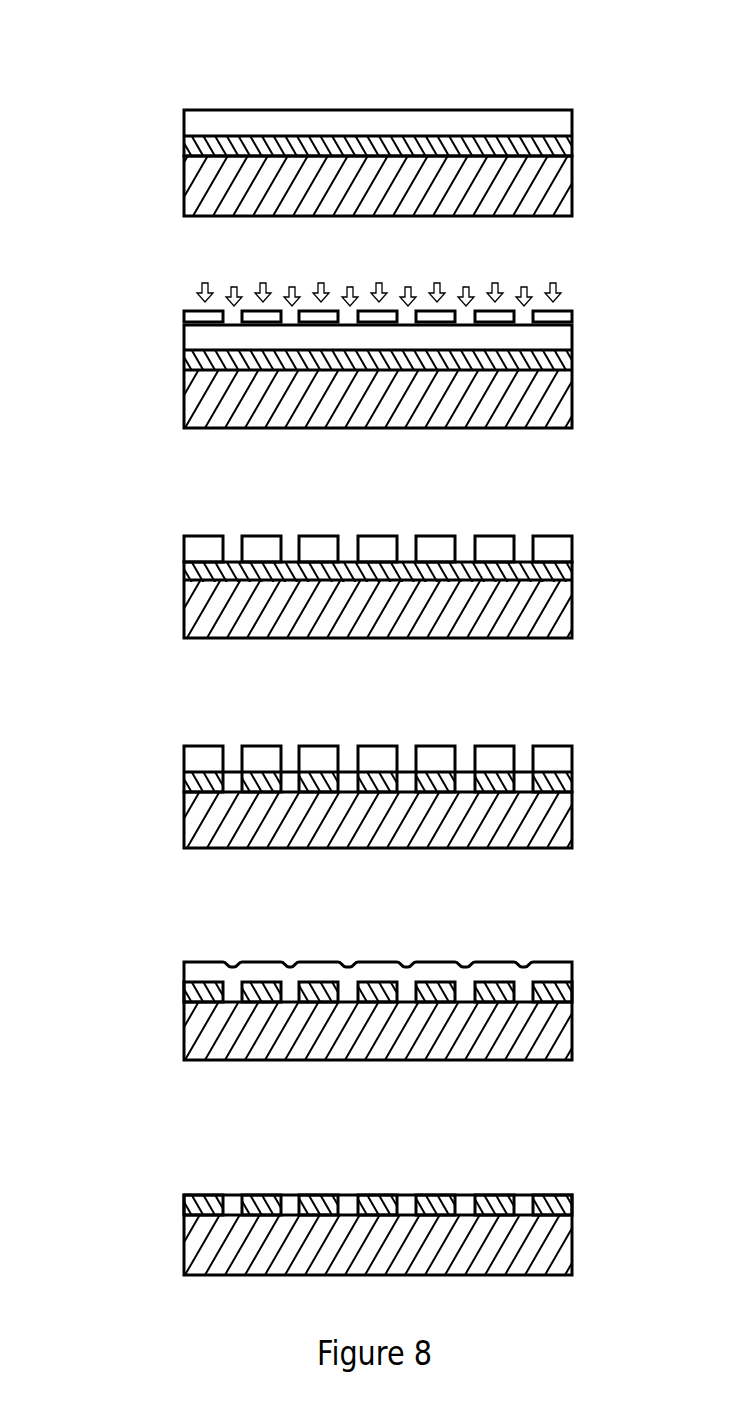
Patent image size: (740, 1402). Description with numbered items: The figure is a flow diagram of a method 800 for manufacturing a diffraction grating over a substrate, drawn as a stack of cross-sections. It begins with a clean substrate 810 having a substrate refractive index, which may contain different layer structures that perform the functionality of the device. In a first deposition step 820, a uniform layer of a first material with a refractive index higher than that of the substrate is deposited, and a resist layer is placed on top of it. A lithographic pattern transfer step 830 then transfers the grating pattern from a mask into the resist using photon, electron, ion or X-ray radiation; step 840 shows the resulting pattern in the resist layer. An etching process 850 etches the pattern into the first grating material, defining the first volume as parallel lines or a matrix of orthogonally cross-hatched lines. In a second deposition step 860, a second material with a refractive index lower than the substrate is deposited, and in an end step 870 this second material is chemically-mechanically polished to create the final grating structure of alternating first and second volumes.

The method for manufacturing a diffraction grating 800 is at (410, 48).
The substrate 810 is at (575, 193).
The first deposition step 820 is at (99, 57).
The lithographic pattern transfer step 830 is at (99, 445).
The step of pattern transferred to resist layer 840 is at (99, 482).
The etching process 850 is at (97, 693).
The second deposition step 860 is at (97, 903).
The end step 870 is at (96, 1115).